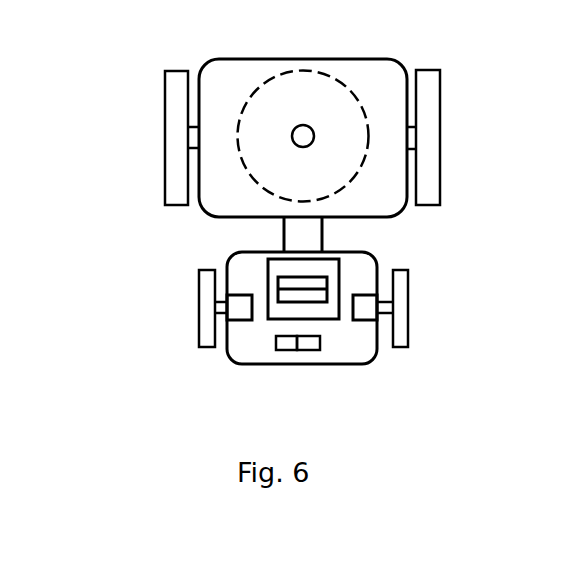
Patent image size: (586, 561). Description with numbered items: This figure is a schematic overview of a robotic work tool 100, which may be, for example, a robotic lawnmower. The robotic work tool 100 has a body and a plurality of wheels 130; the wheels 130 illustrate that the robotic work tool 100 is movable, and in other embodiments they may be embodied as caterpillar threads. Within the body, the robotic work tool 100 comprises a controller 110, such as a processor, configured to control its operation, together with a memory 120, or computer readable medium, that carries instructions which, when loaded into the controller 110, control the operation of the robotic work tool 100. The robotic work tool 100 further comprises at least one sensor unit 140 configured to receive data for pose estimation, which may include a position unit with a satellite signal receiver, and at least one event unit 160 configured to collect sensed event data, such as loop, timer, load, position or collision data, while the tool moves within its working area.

The robotic work tool 100 is at (157, 41).
The controller 110 is at (327, 280).
The memory 120 is at (327, 297).
The wheels 130 is at (172, 128).
The sensor unit 140 is at (287, 350).
The event unit 160 is at (307, 350).